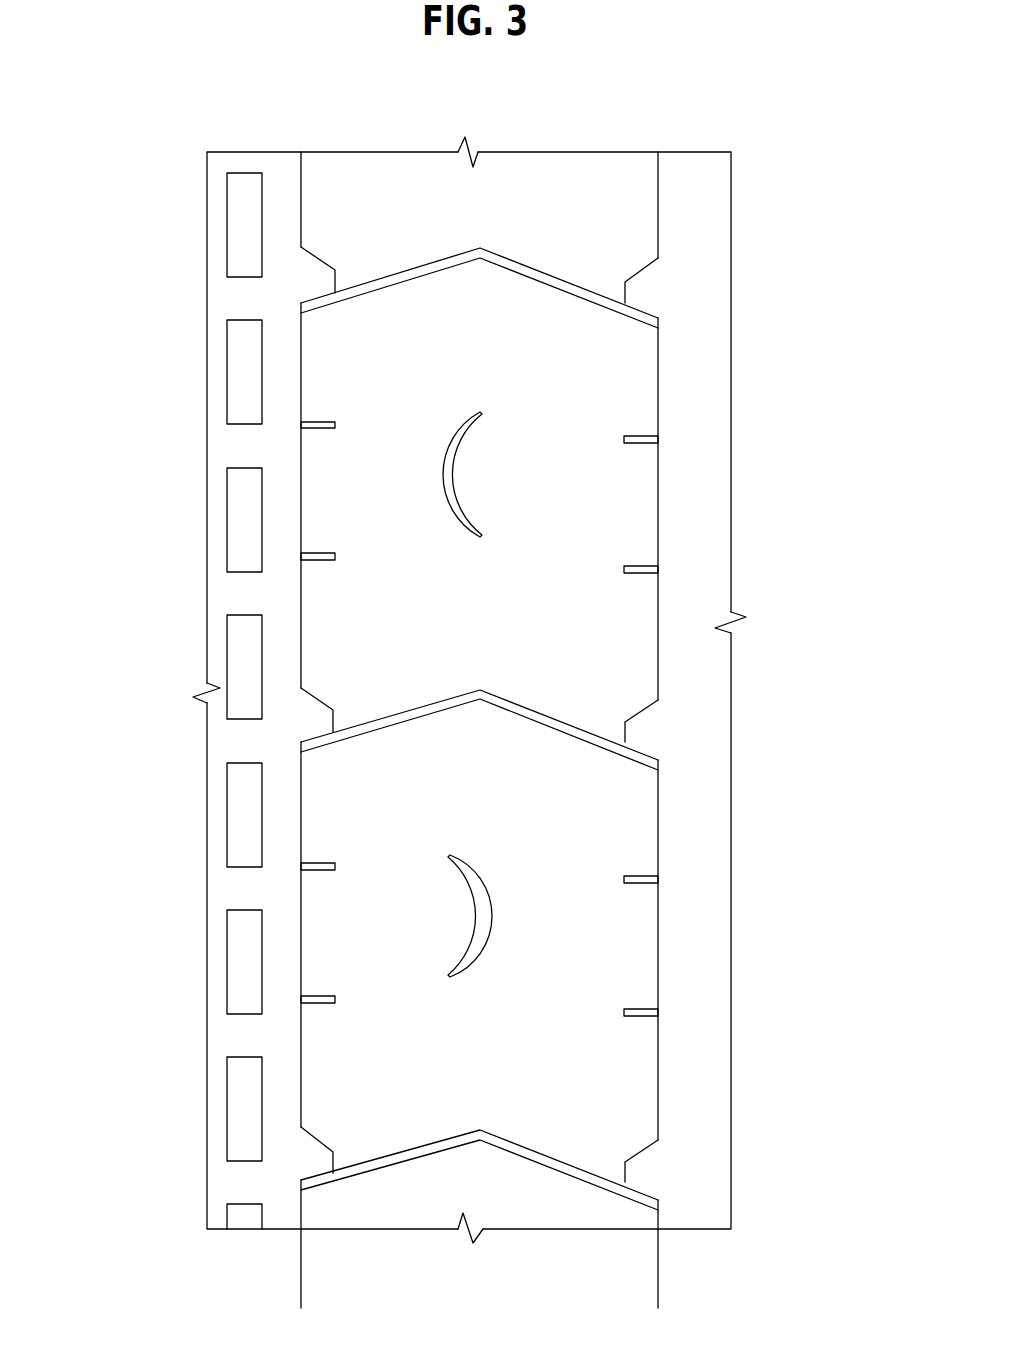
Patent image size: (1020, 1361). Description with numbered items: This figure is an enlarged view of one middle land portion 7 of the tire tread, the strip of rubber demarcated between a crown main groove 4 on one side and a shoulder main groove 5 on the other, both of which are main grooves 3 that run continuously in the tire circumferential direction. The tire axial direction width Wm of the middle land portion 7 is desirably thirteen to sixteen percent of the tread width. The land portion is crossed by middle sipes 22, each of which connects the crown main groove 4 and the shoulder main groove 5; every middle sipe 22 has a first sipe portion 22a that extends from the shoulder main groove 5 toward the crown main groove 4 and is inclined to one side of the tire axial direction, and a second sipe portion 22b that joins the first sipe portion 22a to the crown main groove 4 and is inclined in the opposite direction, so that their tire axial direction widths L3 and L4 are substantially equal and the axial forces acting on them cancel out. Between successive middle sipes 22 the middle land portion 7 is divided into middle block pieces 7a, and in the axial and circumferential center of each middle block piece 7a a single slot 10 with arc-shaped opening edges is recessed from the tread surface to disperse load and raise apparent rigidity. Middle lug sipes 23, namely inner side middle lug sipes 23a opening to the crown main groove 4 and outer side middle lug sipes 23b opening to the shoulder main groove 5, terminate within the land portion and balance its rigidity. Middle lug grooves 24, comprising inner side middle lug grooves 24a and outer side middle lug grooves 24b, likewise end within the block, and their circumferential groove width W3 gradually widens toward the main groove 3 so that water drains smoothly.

The main groove 3 is at (479, 692).
The crown main groove 4 is at (281, 180).
The shoulder main groove 5 is at (696, 180).
The middle land portion 7 is at (579, 714).
The middle block piece 7a is at (574, 773).
The slot 10 is at (447, 475).
The middle sipe 22 is at (645, 519).
The first sipe portion 22a is at (645, 308).
The second sipe portion 22b is at (395, 280).
The middle lug sipe 23 is at (472, 681).
The inner side middle lug sipe 23a is at (322, 423).
The outer side middle lug sipe 23b is at (640, 570).
The middle lug groove 24 is at (471, 714).
The inner side middle lug groove 24a is at (308, 1147).
The outer side middle lug groove 24b is at (643, 730).
The tire axial direction width of the first sipe portion L3 is at (480, 203).
The tire axial direction width of the second sipe portion L4 is at (480, 248).
The tire axial direction width of the middle land portion Wm is at (658, 1302).
The tire circumferential direction groove width of the middle lug groove W3 is at (317, 1105).